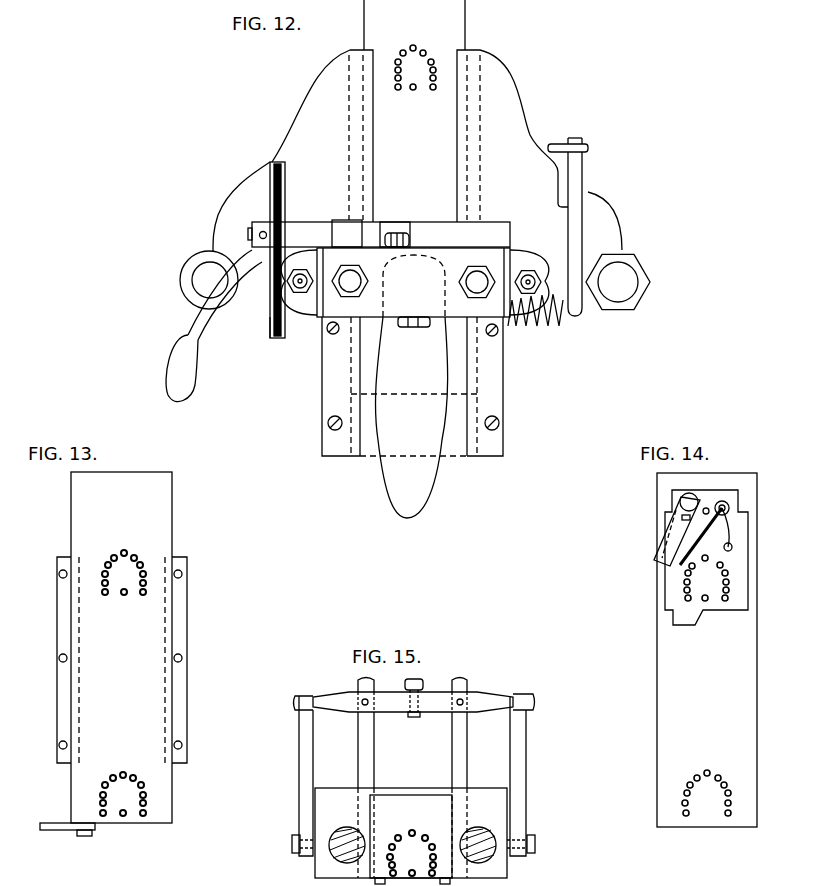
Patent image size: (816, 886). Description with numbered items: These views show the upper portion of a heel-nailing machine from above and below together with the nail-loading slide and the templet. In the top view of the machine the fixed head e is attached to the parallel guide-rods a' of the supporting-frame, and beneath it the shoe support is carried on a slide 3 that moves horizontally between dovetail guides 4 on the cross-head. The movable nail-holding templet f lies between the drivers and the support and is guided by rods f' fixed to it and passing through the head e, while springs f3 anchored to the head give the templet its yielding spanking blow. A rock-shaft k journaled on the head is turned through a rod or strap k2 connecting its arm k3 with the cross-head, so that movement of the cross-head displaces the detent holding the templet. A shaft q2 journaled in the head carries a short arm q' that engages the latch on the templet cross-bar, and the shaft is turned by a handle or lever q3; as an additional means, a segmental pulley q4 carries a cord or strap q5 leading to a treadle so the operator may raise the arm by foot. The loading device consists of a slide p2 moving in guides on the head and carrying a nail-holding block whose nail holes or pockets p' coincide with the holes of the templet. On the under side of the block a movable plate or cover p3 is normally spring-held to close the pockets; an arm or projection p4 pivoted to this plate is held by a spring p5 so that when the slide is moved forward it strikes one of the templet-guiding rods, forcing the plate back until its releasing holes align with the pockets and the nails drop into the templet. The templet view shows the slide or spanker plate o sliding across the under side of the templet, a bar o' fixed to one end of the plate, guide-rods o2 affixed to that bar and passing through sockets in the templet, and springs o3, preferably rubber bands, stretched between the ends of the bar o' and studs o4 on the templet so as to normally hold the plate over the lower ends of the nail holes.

In FIG. 12, the slide p2 is at (437, 30).
In FIG. 13, the slide p2 is at (155, 494).
In FIG. 14, the slide p2 is at (707, 650).
In FIG. 12, the nail holes or pockets p' is at (418, 71).
In FIG. 13, the nail holes or pockets p' is at (119, 668).
In FIG. 14, the movable plate or cover p3 is at (705, 540).
In FIG. 14, the arm or projection p4 is at (680, 530).
In FIG. 14, the spring p5 is at (700, 530).
In FIG. 12, the short arm q' is at (395, 218).
In FIG. 12, the shaft q2 is at (293, 236).
In FIG. 12, the handle or lever q3 is at (172, 352).
In FIG. 12, the segmental pulley q4 is at (270, 198).
In FIG. 12, the cord or strap q5 is at (280, 325).
In FIG. 12, the head e is at (297, 318).
In FIG. 15, the movable nail-holding templet f is at (311, 856).
In FIG. 12, the rods f' is at (418, 286).
In FIG. 15, the rods f' is at (506, 854).
In FIG. 12, the springs f3 is at (290, 290).
In FIG. 12, the slide 3 is at (455, 362).
In FIG. 12, the dovetail guides 4 is at (355, 456).
In FIG. 12, the rock-shaft k is at (565, 322).
In FIG. 12, the rod or strap k2 is at (549, 146).
In FIG. 12, the arm k3 is at (582, 194).
In FIG. 12, the guide-rods a' is at (400, 280).
In FIG. 15, the slide or spanker plate o is at (411, 836).
In FIG. 15, the bar o' is at (414, 711).
In FIG. 15, the guide-rods o2 is at (358, 756).
In FIG. 15, the springs o3 is at (299, 762).
In FIG. 15, the studs o4 is at (292, 845).